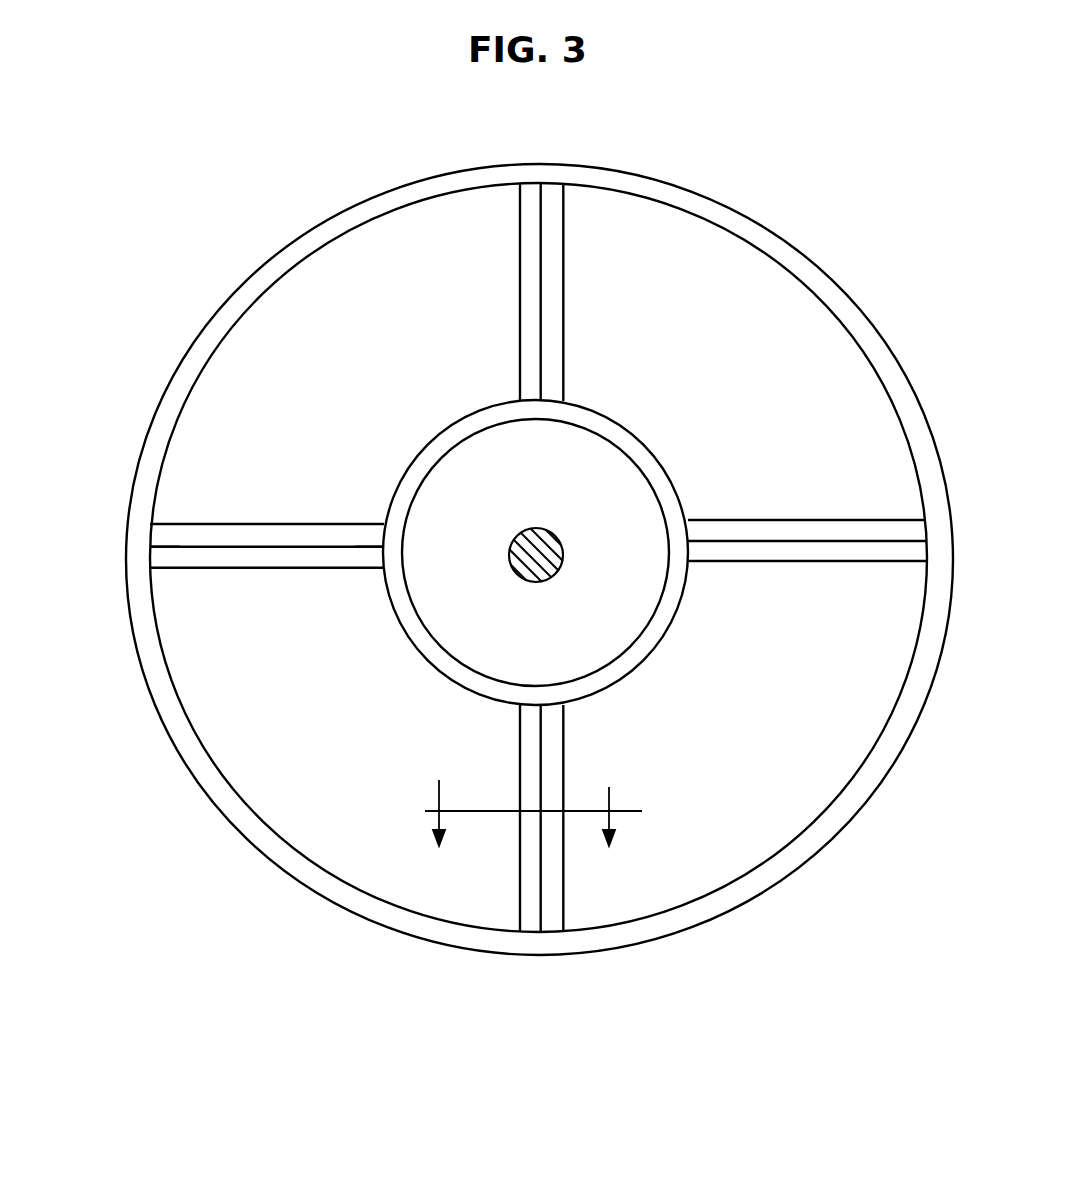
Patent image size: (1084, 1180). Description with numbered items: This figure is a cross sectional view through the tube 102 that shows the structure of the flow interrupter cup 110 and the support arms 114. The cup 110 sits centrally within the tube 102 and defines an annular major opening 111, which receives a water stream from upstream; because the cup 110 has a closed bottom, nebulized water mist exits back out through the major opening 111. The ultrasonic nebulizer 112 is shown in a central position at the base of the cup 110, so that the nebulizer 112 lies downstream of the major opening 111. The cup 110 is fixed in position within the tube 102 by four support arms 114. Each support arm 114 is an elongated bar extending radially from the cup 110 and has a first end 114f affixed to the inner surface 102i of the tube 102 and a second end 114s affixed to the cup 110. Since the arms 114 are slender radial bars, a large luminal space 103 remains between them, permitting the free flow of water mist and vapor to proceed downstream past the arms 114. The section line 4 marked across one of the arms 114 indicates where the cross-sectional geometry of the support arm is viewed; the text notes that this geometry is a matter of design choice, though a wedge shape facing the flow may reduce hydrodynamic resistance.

The tube 102 is at (136, 460).
The inner surface of the tube 102i is at (200, 370).
The luminal space 103 is at (722, 383).
The flow interrupter cup 110 is at (535, 552).
The annular major opening 111 is at (667, 614).
The ultrasonic nebulizer 112 is at (512, 540).
The support arms 114 is at (275, 524).
The first end of the support arm 114f is at (160, 561).
The second end of the support arm 114s is at (380, 565).
The section line 4- 4 is at (524, 814).